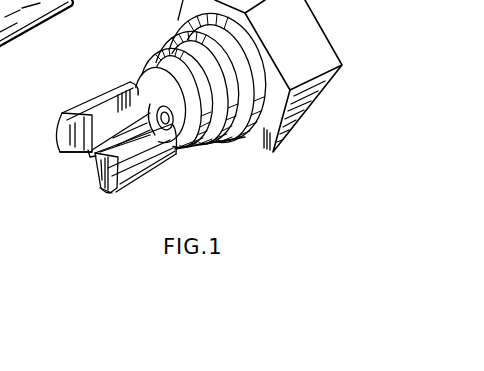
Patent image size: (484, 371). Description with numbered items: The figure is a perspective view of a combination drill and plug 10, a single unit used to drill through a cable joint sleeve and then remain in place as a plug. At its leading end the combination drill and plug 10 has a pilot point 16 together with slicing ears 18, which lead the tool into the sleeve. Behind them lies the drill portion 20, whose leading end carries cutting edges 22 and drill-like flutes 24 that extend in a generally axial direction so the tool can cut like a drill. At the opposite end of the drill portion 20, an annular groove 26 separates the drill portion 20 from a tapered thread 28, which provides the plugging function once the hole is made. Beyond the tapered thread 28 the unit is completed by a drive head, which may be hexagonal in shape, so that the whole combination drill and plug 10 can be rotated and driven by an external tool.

The combination drill and plug 10 is at (333, 37).
The pilot point 16 is at (90, 160).
The slicing ears 18 is at (72, 148).
The drill portion 20 is at (83, 108).
The cutting edges 22 is at (80, 148).
The drill-like flutes 24 is at (130, 82).
The annular groove 26 is at (173, 150).
The tapered thread 28 is at (213, 143).